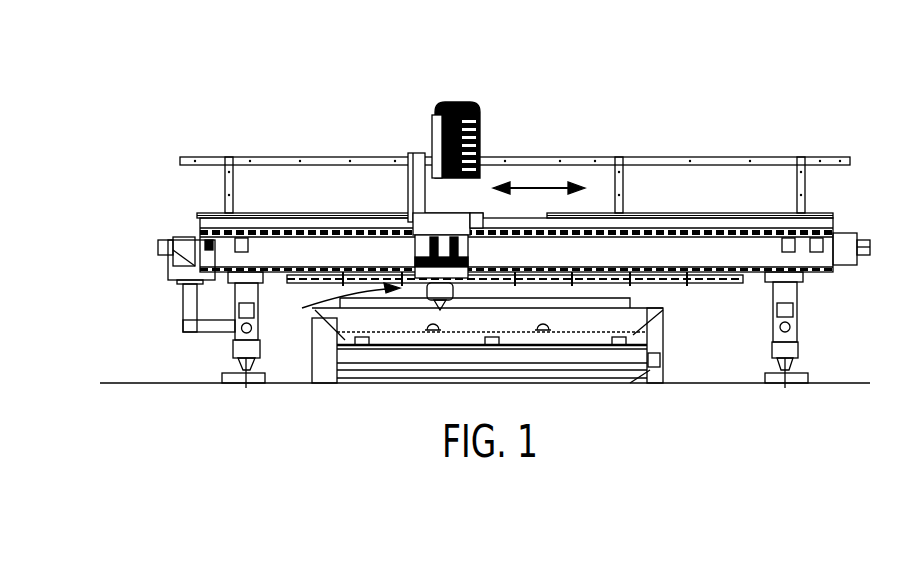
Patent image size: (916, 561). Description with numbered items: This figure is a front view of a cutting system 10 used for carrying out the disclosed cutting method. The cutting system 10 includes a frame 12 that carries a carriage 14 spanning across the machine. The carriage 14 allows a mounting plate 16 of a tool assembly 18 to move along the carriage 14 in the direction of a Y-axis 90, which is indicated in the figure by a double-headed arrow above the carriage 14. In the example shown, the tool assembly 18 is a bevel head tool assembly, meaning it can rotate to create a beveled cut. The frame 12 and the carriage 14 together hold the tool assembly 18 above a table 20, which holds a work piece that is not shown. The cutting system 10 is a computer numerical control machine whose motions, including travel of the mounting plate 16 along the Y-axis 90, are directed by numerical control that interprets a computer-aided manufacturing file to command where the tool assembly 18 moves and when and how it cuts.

The cutting system 10 is at (672, 118).
The frame 12 is at (800, 330).
The carriage 14 is at (712, 228).
The mounting plate 16 is at (418, 246).
The tool assembly 18 is at (342, 301).
The table 20 is at (663, 345).
The Y-axis 90 is at (538, 185).